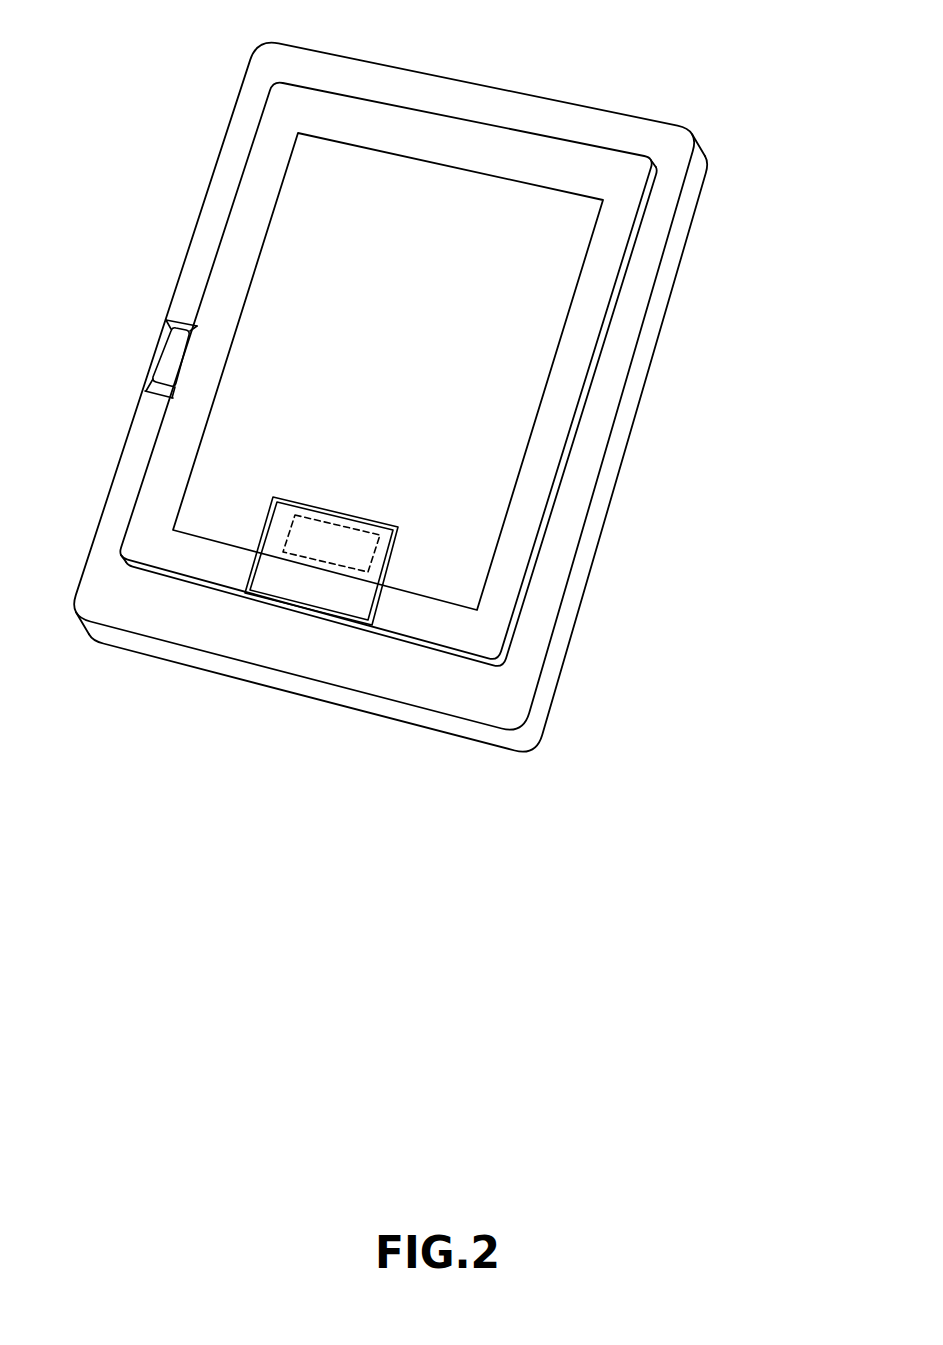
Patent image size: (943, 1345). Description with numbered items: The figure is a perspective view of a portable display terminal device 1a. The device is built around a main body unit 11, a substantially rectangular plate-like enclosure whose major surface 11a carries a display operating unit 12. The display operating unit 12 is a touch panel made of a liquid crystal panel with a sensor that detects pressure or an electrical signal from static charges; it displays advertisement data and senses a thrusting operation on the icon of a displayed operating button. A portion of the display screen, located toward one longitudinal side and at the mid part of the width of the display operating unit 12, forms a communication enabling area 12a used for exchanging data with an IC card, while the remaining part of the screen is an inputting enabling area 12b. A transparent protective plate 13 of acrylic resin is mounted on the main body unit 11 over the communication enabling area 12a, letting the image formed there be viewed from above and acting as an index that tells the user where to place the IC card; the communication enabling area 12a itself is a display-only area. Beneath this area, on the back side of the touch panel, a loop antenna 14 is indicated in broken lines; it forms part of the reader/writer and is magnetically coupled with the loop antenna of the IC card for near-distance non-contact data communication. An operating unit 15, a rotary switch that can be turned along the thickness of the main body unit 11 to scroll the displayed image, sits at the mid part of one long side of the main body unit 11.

The portable display terminal device 1a is at (742, 78).
The main body unit 11 is at (505, 715).
The major surface 11a is at (508, 550).
The display operating unit 12 is at (515, 220).
The communication enabling area 12a is at (365, 545).
The inputting enabling area 12b is at (508, 385).
The protective plate 13 is at (287, 590).
The loop antenna 14 is at (311, 518).
The operating unit 15 is at (163, 362).